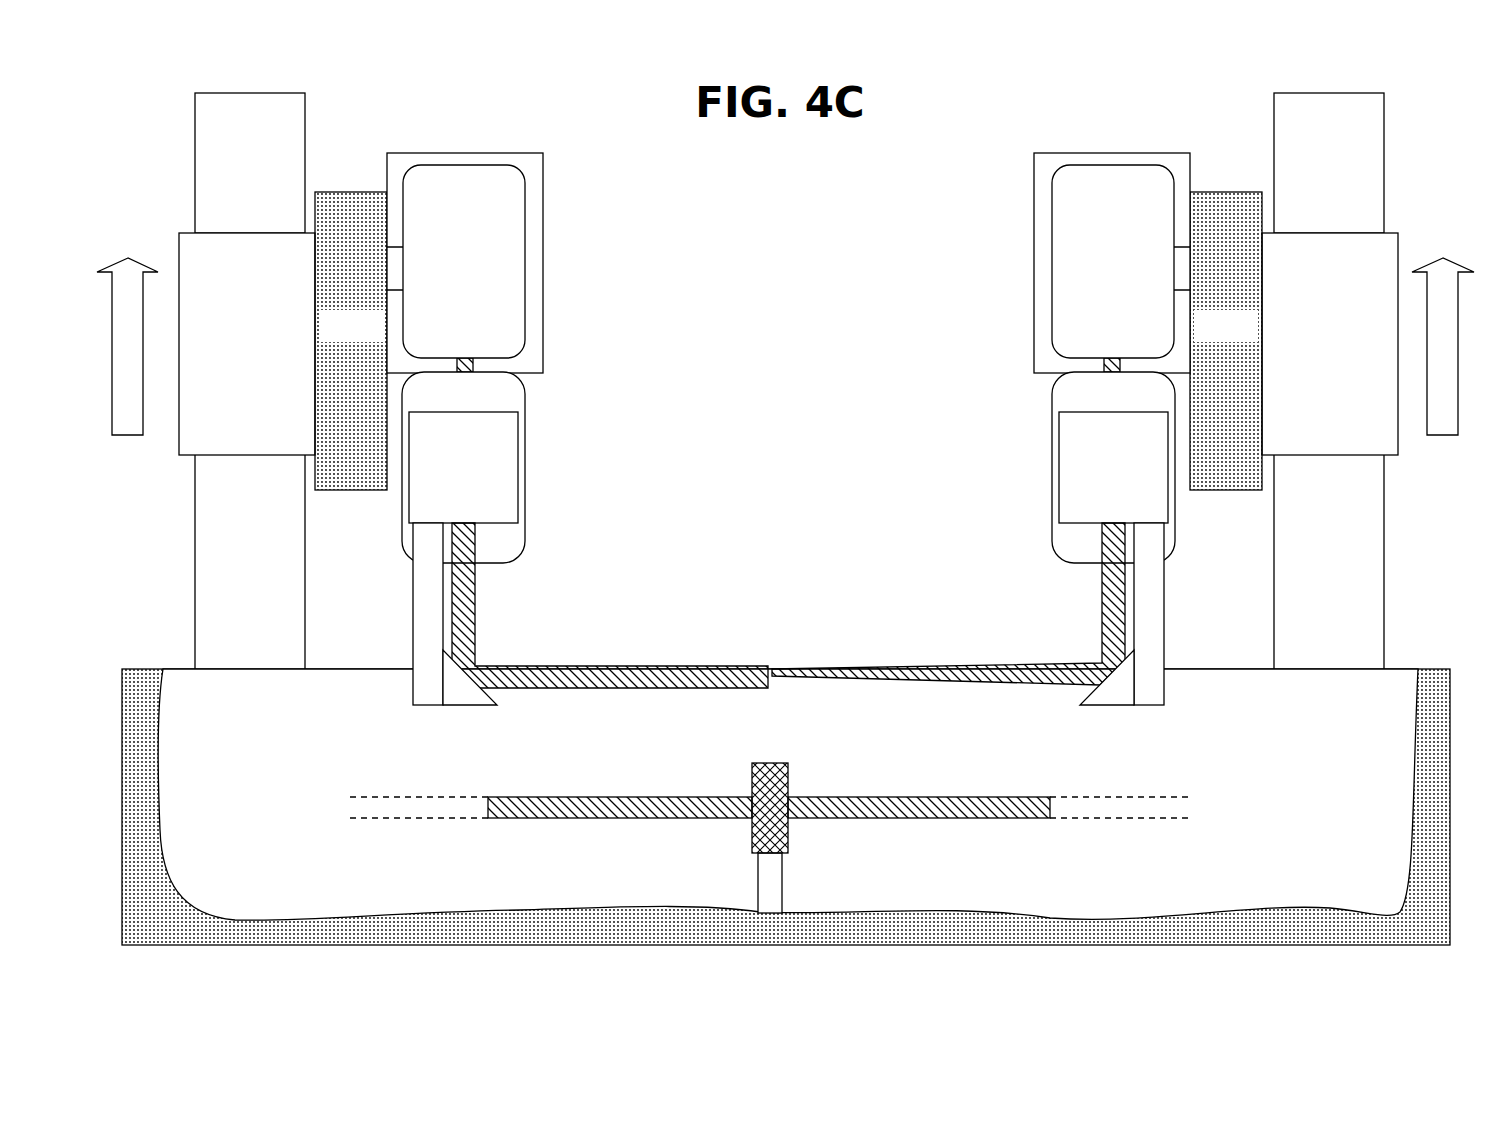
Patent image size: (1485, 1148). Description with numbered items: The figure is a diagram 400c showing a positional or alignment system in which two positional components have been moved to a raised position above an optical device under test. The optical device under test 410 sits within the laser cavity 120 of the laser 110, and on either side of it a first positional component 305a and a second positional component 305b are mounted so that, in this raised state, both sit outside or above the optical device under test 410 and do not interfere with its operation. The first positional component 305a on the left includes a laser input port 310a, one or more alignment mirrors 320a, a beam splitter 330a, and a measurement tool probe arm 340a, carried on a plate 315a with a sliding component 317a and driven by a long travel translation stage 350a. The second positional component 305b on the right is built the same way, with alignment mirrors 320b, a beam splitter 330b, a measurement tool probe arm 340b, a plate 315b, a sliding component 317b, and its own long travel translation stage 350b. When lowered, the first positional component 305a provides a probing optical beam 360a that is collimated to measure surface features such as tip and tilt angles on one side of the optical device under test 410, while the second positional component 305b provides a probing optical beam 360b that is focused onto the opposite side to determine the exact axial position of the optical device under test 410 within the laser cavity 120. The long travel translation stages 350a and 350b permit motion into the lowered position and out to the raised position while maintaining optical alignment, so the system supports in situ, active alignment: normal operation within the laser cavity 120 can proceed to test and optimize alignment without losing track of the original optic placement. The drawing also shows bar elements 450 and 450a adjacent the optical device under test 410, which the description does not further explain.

The laser 110 is at (146, 669).
The laser cavity 120 is at (283, 756).
The first positional component 305a is at (577, 382).
The second positional component 305b is at (981, 429).
The laser input port 310a is at (465, 216).
The plate 315a is at (322, 340).
The plate 315b is at (1197, 340).
The sliding component 317a is at (217, 357).
The sliding component 317b is at (1300, 357).
The alignment mirrors 320a is at (434, 277).
The alignment mirrors 320b is at (1083, 277).
The beam splitter 330a is at (530, 465).
The beam splitter 330b is at (1050, 467).
The measurement tool probe arm 340a is at (434, 482).
The measurement tool probe arm 340b is at (1083, 482).
The long travel translation stage 350a is at (240, 200).
The long travel translation stage 350b is at (1343, 148).
The probing optical beam 360a is at (617, 665).
The probing optical beam 360b is at (932, 665).
The diagram 400c is at (791, 498).
The optical device under test 410 is at (752, 766).
The contact bar 450 is at (925, 797).
The contact bar 450a is at (556, 797).